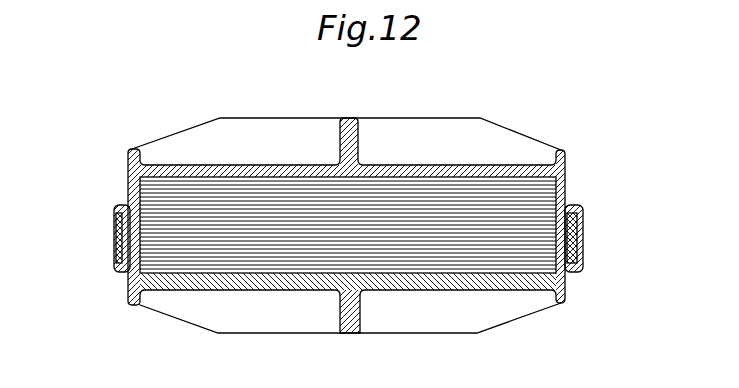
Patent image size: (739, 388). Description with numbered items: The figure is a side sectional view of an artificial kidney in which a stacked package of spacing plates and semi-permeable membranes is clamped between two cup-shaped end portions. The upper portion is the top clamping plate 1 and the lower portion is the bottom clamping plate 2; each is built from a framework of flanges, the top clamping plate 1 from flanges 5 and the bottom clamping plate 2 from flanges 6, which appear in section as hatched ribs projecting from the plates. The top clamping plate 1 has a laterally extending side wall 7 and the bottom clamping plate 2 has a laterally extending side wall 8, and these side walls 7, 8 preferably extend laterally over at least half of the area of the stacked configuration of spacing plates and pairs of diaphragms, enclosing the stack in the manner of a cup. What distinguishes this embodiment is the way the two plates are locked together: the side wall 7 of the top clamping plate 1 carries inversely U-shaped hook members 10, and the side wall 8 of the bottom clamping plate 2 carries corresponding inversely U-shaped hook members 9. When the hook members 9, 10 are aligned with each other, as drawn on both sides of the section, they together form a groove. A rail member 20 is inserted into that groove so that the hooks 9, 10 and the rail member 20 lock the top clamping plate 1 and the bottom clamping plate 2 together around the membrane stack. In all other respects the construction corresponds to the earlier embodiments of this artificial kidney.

The top clamping plate 1 is at (234, 136).
The bottom clamping plate 2 is at (231, 310).
The flanges 5 is at (359, 120).
The flanges 6 is at (358, 333).
The laterally extending side wall 7 is at (565, 173).
The laterally extending side wall 8 is at (565, 273).
The hook members 9 is at (127, 208).
The hook members 10 is at (118, 242).
The rail members 20 is at (572, 210).